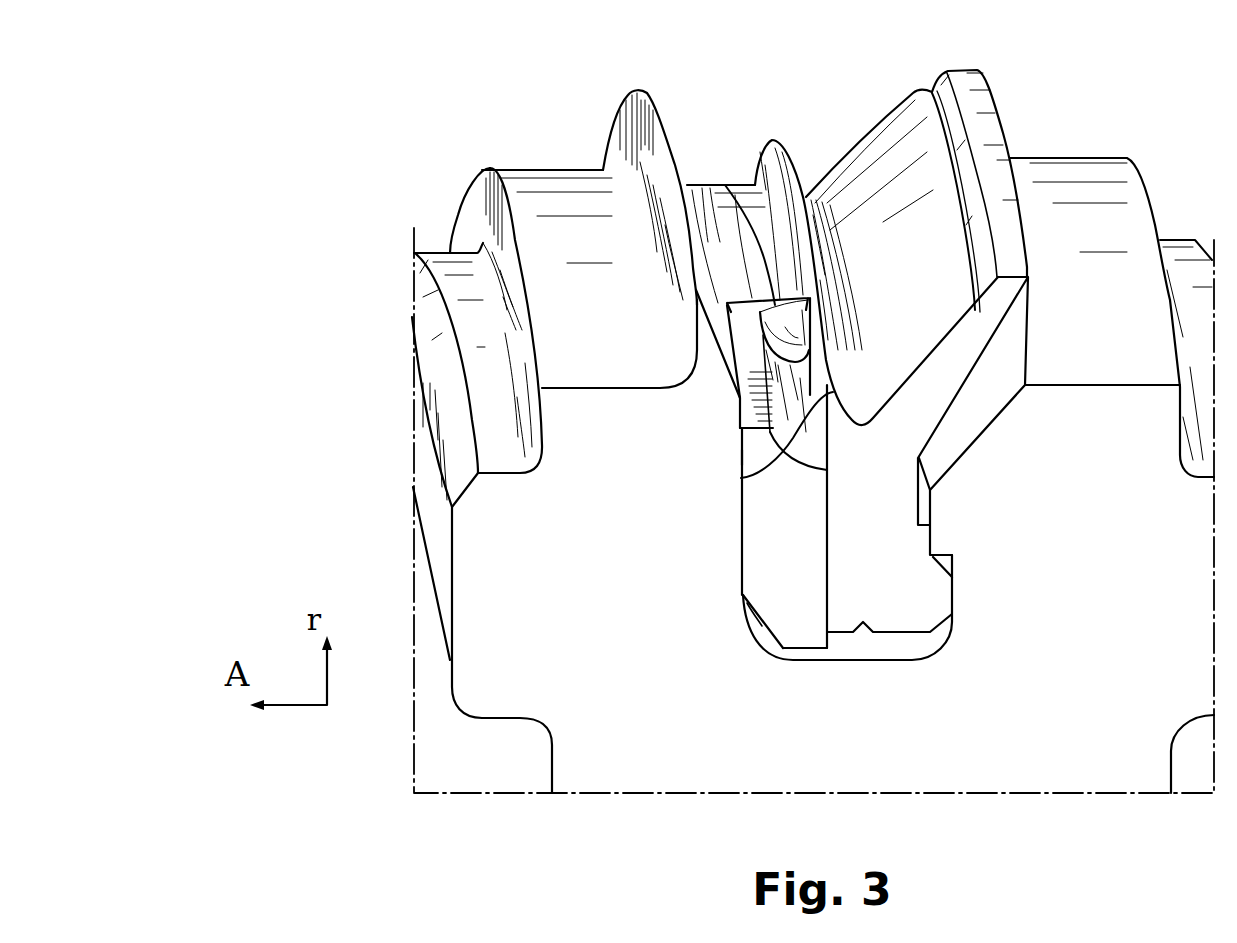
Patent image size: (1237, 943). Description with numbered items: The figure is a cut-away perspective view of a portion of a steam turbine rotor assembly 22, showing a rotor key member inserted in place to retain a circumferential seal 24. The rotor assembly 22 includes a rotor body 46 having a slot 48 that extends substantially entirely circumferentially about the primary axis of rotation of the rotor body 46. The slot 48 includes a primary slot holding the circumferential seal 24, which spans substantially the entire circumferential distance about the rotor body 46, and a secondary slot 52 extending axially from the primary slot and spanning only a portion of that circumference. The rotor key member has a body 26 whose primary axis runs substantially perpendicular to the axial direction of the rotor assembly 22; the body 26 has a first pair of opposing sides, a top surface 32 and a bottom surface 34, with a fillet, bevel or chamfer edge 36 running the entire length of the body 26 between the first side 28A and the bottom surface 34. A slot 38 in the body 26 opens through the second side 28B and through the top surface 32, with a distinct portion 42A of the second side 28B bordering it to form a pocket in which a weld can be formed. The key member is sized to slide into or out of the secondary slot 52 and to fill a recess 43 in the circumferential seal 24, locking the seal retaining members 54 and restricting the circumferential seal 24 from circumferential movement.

The rotor assembly 22 is at (428, 132).
The circumferential seal 24 is at (908, 253).
The body 26 is at (764, 533).
The first one of the first pair of opposing sides 28A is at (742, 498).
The second one of the first pair of opposing sides 28B is at (827, 557).
The top surface 32 is at (753, 375).
The bottom surface 34 is at (802, 648).
The fillet, bevel or chamfer edge 36 is at (756, 622).
The slot 38 is at (795, 365).
The distinct portion of the second side 42A is at (763, 303).
The recess 43 is at (745, 478).
The rotor body 46 is at (556, 313).
The slot 48 is at (881, 676).
The secondary slot 52 is at (728, 456).
The seal retaining member 54 is at (758, 237).